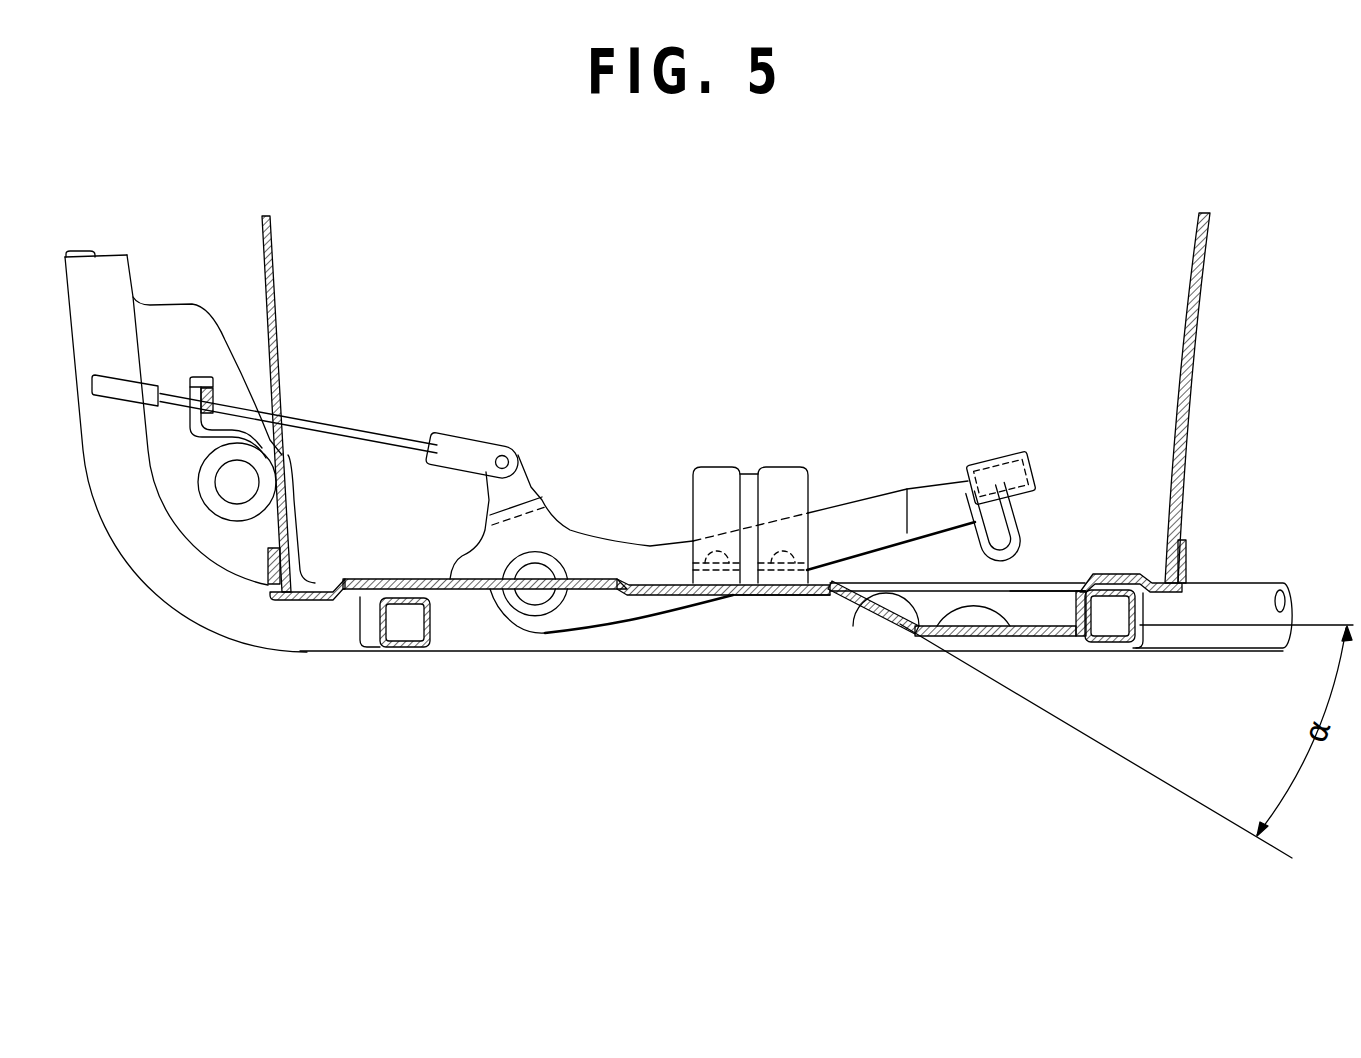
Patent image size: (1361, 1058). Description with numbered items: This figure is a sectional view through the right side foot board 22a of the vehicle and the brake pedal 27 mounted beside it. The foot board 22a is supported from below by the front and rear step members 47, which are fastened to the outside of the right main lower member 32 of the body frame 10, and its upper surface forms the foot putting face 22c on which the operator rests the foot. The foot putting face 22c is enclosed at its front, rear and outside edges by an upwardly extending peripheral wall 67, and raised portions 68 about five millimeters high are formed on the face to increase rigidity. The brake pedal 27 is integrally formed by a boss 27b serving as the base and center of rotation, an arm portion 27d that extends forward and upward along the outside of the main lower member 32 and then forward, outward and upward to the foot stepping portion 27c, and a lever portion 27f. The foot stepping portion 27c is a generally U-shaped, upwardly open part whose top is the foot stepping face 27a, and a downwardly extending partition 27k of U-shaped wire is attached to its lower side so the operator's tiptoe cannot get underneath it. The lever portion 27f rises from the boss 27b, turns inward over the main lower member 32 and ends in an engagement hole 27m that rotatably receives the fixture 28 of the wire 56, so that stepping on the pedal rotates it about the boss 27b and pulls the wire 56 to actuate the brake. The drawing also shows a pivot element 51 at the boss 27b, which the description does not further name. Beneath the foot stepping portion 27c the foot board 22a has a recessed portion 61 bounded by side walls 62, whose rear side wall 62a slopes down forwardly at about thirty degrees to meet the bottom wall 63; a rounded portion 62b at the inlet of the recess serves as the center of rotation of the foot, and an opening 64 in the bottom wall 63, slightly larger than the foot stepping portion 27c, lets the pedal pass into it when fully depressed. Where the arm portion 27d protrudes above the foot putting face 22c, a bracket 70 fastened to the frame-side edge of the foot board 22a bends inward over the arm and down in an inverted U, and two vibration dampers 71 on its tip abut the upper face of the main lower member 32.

The body frame 10 is at (781, 654).
The foot board 22a is at (445, 598).
The foot putting face 22c is at (643, 582).
The brake pedal 27 is at (657, 612).
The foot stepping face 27a is at (985, 462).
The boss 27b is at (537, 620).
The foot stepping portion 27c is at (1005, 468).
The arm portion 27d is at (832, 517).
The lever portion 27f is at (520, 483).
The partition 27k is at (1017, 520).
The engagement hole 27m is at (507, 455).
The fixture 28 is at (460, 447).
The main lower member 32 is at (735, 630).
The step members 47 is at (397, 653).
The pivot roller 51 is at (550, 610).
The wire 56 is at (317, 423).
The recessed portion 61 is at (1037, 632).
The side walls 62 is at (1053, 587).
The rear side wall 62a is at (920, 630).
The rounded portion 62b is at (830, 593).
The bottom wall 63 is at (1013, 610).
The opening 64 is at (1025, 603).
The peripheral wall 67 is at (265, 566).
The raised portions 68 is at (367, 581).
The bracket 70 is at (707, 470).
The vibration dampers 71 is at (787, 470).